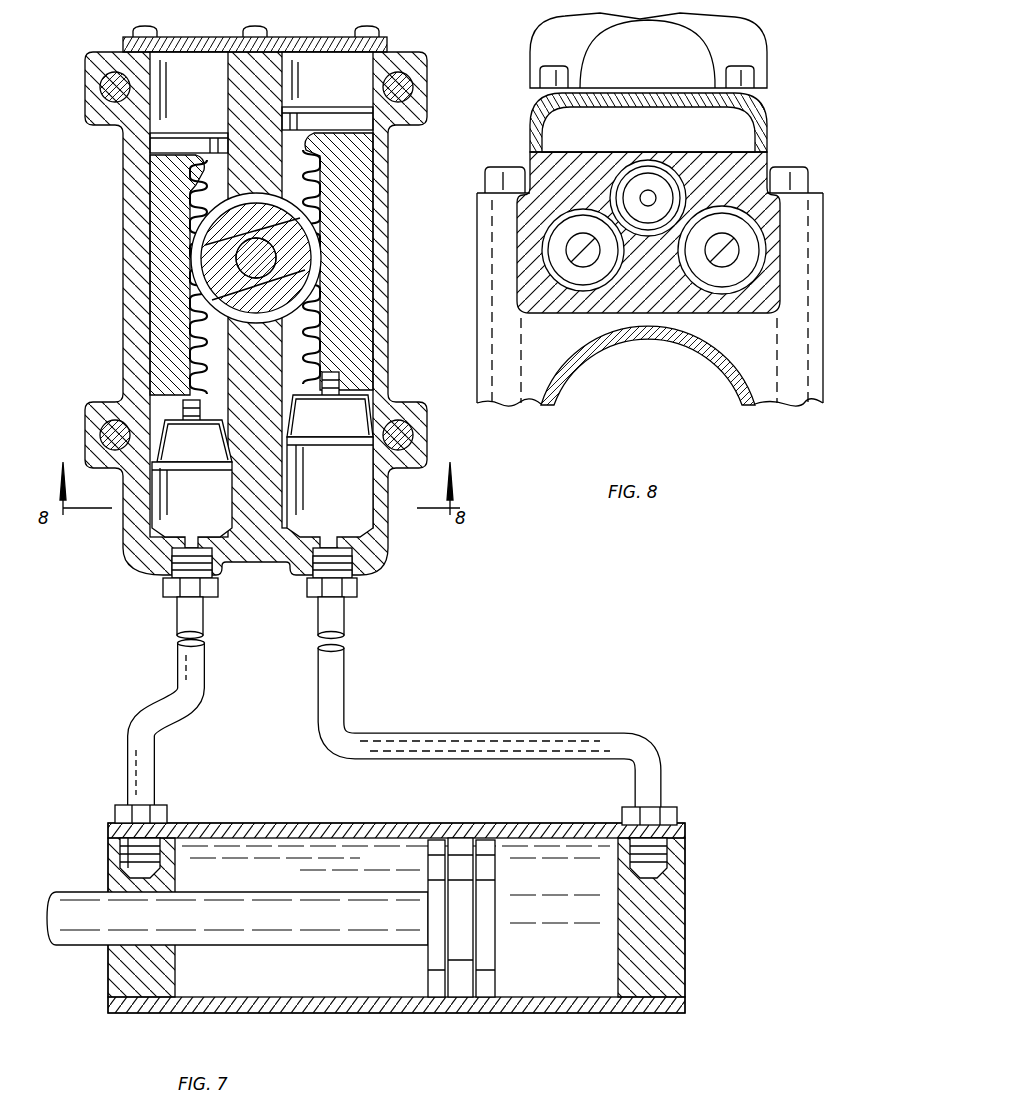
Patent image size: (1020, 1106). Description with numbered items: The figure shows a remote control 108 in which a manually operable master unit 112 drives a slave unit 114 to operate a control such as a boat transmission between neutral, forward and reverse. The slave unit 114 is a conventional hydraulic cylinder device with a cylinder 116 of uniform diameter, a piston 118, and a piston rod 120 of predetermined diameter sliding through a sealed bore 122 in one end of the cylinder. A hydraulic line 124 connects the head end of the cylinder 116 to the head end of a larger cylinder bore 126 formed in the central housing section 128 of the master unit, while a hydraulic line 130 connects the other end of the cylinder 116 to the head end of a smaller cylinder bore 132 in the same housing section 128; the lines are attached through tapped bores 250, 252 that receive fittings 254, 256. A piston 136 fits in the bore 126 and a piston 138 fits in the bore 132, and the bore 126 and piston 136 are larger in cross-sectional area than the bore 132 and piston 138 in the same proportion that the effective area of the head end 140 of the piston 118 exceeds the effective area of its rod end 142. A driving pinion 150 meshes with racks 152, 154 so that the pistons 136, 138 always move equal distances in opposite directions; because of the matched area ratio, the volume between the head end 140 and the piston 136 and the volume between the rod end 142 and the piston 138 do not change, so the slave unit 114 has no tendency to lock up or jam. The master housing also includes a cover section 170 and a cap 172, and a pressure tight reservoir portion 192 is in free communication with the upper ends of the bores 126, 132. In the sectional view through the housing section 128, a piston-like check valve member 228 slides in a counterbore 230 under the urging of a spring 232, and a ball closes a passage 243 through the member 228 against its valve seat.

In FIG. 7, the remote control 108 is at (362, 936).
In FIG. 7, the master unit 112 is at (123, 233).
In FIG. 7, the slave unit 114 is at (432, 1013).
In FIG. 7, the cylinder 116 is at (285, 832).
In FIG. 7, the piston 118 is at (466, 917).
In FIG. 7, the piston rod 120 is at (92, 940).
In FIG. 7, the bore 122 is at (114, 893).
In FIG. 7, the hydraulic line 124 is at (585, 738).
In FIG. 7, the cylinder portion or bore 126 is at (355, 500).
In FIG. 8, the cylinder portion or bore 126 is at (728, 292).
In FIG. 7, the central housing section 128 is at (262, 555).
In FIG. 8, the central housing section 128 is at (650, 314).
In FIG. 7, the hydraulic line 130 is at (130, 725).
In FIG. 7, the cylinder portion or bore 132 is at (190, 505).
In FIG. 8, the cylinder portion or bore 132 is at (590, 286).
In FIG. 7, the piston 136 is at (360, 343).
In FIG. 8, the piston 136 is at (715, 226).
In FIG. 7, the piston 138 is at (160, 335).
In FIG. 8, the piston 138 is at (583, 226).
In FIG. 7, the head end 140 is at (498, 965).
In FIG. 7, the rod end 142 is at (430, 960).
In FIG. 7, the driving pinion 150 is at (238, 262).
In FIG. 7, the rack 152 is at (300, 192).
In FIG. 7, the rack 154 is at (198, 190).
In FIG. 8, the cover section 170 is at (667, 62).
In FIG. 7, the cap 172 is at (123, 40).
In FIG. 8, the pressure tight reservoir portion 192 is at (667, 130).
In FIG. 8, the check valve member 228 is at (650, 165).
In FIG. 8, the counterbore 230 is at (660, 234).
In FIG. 8, the spring 232 is at (700, 178).
In FIG. 8, the passage 243 is at (646, 194).
In FIG. 7, the tapped bore 250 is at (183, 568).
In FIG. 7, the tapped bore 252 is at (330, 568).
In FIG. 7, the fitting 254 is at (163, 590).
In FIG. 7, the fitting 256 is at (352, 592).